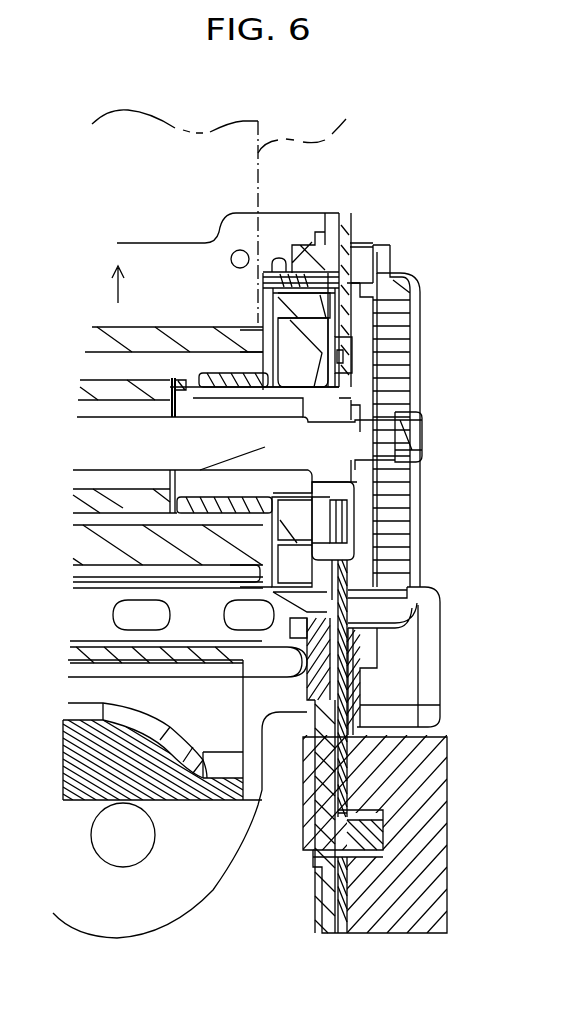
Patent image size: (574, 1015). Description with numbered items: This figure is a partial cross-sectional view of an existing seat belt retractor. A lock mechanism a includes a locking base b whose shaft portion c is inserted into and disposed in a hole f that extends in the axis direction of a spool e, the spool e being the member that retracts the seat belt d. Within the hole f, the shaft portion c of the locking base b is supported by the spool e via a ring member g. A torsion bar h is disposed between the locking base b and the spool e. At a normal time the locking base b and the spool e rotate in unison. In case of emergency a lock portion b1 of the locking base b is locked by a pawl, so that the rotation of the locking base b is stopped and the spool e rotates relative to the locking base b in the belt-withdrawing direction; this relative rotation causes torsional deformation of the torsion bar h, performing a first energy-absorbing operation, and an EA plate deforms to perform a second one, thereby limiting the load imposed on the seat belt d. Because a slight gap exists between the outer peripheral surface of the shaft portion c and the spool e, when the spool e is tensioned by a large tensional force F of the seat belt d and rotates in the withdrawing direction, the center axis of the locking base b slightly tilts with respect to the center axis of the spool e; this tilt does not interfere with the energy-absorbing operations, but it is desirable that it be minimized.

The lock mechanism a is at (414, 272).
The locking base b is at (320, 532).
The lock portion b1 is at (347, 550).
The shaft portion c is at (240, 492).
The seat belt d is at (227, 211).
The spool e is at (113, 555).
The hole f is at (210, 503).
The ring member g is at (218, 372).
The torsion bar h is at (93, 458).
The tensional force F is at (124, 279).